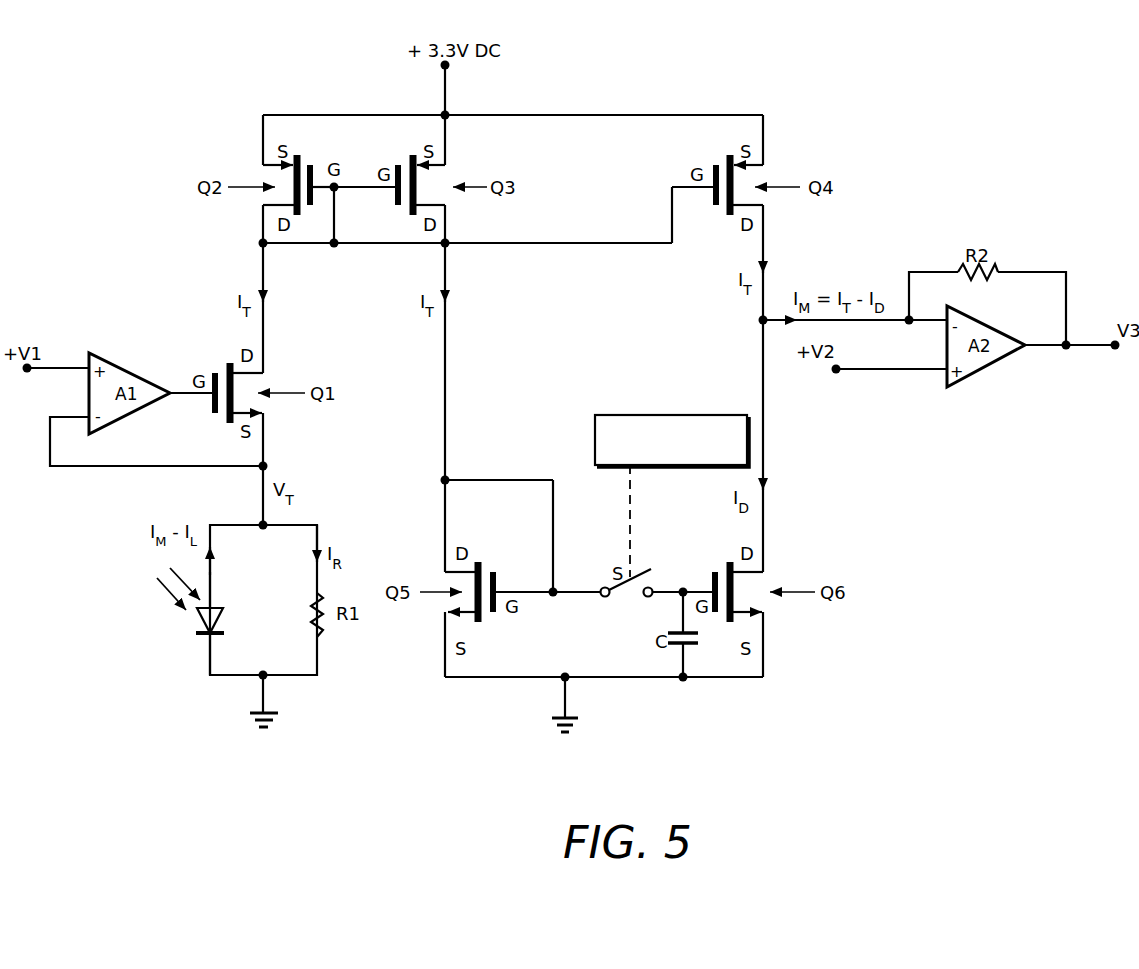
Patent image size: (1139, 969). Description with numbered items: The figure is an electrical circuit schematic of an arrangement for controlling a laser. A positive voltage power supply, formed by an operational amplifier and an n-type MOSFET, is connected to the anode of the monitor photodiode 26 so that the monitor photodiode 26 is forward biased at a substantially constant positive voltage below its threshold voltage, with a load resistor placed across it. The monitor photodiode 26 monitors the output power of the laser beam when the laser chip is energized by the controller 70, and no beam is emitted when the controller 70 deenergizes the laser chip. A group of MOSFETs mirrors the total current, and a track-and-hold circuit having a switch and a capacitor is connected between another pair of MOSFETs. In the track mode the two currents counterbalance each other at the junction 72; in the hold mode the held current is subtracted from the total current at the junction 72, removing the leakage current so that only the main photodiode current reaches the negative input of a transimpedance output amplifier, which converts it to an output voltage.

The monitor photodiode 26 is at (205, 643).
The controller 70 is at (672, 415).
The junction 72 is at (763, 320).